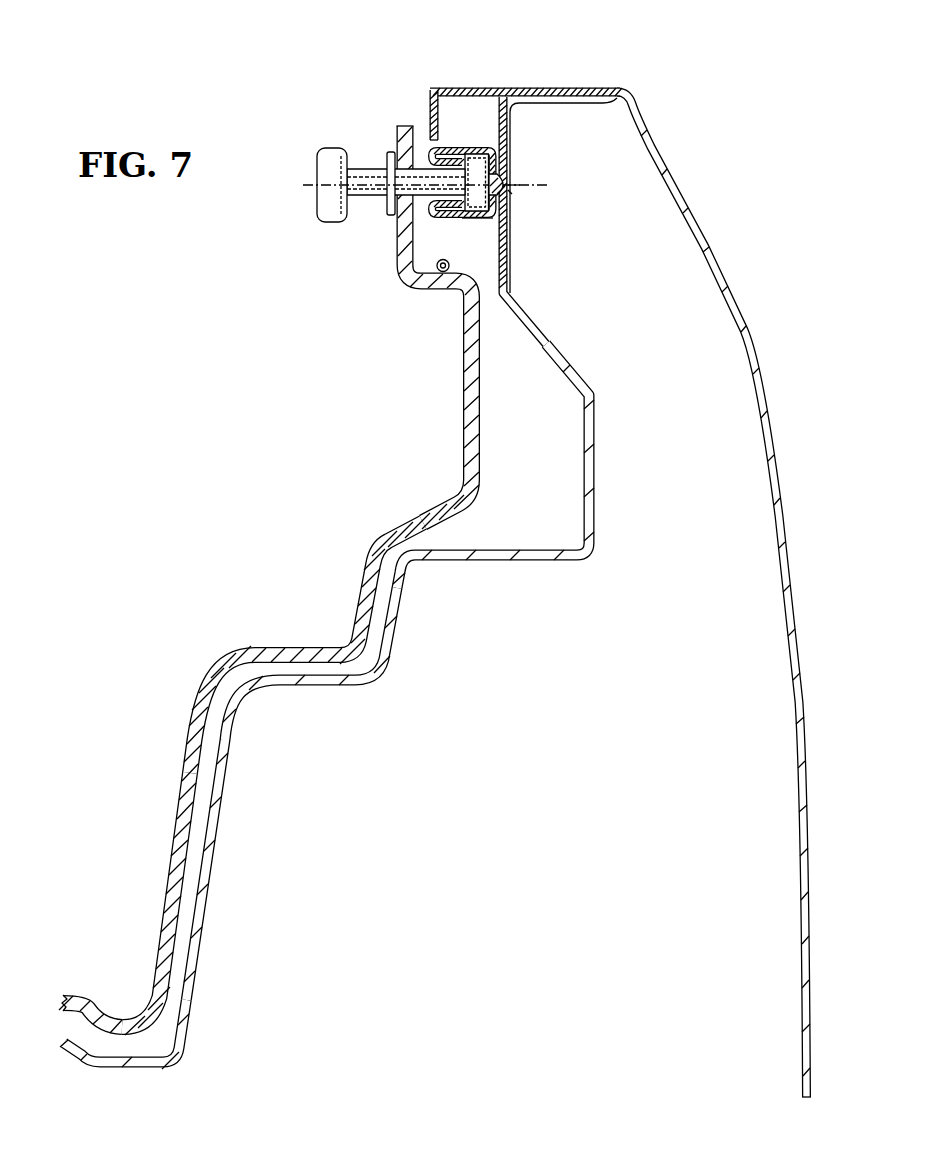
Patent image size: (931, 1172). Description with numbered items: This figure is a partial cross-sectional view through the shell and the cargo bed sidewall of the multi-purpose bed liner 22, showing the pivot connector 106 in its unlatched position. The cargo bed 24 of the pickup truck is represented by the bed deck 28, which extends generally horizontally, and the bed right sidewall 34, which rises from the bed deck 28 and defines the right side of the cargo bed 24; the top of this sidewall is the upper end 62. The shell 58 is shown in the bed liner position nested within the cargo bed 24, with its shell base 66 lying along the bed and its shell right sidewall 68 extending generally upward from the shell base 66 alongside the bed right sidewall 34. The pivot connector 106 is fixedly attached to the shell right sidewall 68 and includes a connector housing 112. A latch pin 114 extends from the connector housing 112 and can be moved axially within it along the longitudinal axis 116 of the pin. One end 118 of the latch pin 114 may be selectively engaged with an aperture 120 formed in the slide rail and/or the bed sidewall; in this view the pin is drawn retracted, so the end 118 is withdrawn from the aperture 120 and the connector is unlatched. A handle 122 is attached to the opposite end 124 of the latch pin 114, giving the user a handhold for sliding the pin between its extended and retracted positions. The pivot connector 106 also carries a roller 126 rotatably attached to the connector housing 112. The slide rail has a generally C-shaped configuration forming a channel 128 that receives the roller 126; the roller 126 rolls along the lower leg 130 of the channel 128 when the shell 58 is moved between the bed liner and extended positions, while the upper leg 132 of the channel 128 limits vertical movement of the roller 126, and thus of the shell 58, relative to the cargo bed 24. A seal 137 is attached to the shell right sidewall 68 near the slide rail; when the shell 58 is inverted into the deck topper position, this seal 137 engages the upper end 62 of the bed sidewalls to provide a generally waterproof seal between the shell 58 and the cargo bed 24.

The multi-purpose bed liner 22 is at (186, 741).
The cargo bed 24 is at (732, 287).
The bed deck 28 is at (118, 1068).
The bed right sidewall 34 is at (207, 899).
The shell 58 is at (283, 645).
The upper end 62 is at (543, 97).
The shell base 66 is at (72, 993).
The shell right sidewall 68 is at (462, 403).
The pivot connector 106 is at (312, 206).
The connector housing 112 is at (418, 212).
The latch pin 114 is at (495, 162).
The longitudinal axis 116 is at (512, 187).
The end 118 is at (505, 183).
The aperture 120 is at (510, 193).
The handle 122 is at (333, 148).
The end 124 is at (368, 205).
The roller 126 is at (472, 147).
The channel 128 is at (446, 130).
The lower leg 130 is at (473, 222).
The upper leg 132 is at (487, 146).
The seal 137 is at (450, 264).